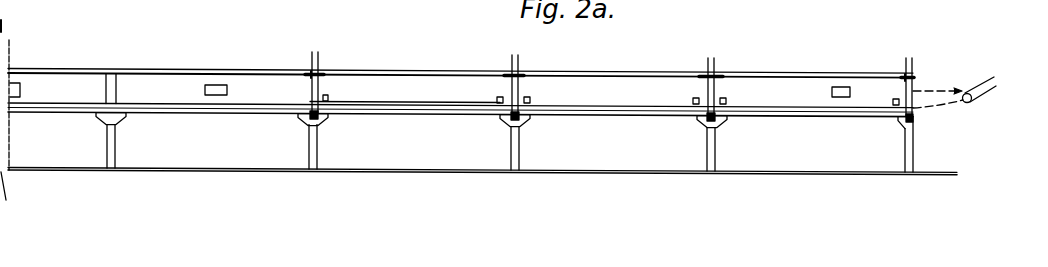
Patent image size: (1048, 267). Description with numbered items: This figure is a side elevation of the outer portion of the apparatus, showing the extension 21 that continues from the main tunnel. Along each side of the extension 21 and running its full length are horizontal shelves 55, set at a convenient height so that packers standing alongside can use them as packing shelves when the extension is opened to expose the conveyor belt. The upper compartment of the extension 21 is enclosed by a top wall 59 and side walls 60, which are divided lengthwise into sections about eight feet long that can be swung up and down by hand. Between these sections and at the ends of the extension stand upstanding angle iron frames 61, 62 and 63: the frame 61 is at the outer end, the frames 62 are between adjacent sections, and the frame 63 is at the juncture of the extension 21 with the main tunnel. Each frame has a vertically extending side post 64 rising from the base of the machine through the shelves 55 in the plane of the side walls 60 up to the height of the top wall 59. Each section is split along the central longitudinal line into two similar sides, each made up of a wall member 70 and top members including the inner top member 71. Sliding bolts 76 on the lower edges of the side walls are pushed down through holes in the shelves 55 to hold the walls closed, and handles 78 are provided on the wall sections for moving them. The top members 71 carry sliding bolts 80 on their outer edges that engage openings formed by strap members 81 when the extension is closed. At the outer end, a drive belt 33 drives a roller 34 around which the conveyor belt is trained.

The extension 21 is at (617, 118).
The drive belt 33 is at (995, 76).
The roller 34 is at (967, 103).
The horizontal shelves 55 is at (421, 102).
The top wall 59 is at (588, 70).
The side walls 60 is at (614, 88).
The angle iron frame 61 is at (907, 58).
The angle iron frames 62 is at (513, 56).
The angle iron frame 63 is at (318, 55).
The side post 64 is at (308, 90).
The wall member 70 is at (595, 92).
The inner top member 71 is at (386, 70).
The sliding bolts 76 is at (700, 108).
The handles 78 is at (366, 97).
The sliding bolts 80 is at (323, 72).
The strap members 81 is at (311, 71).